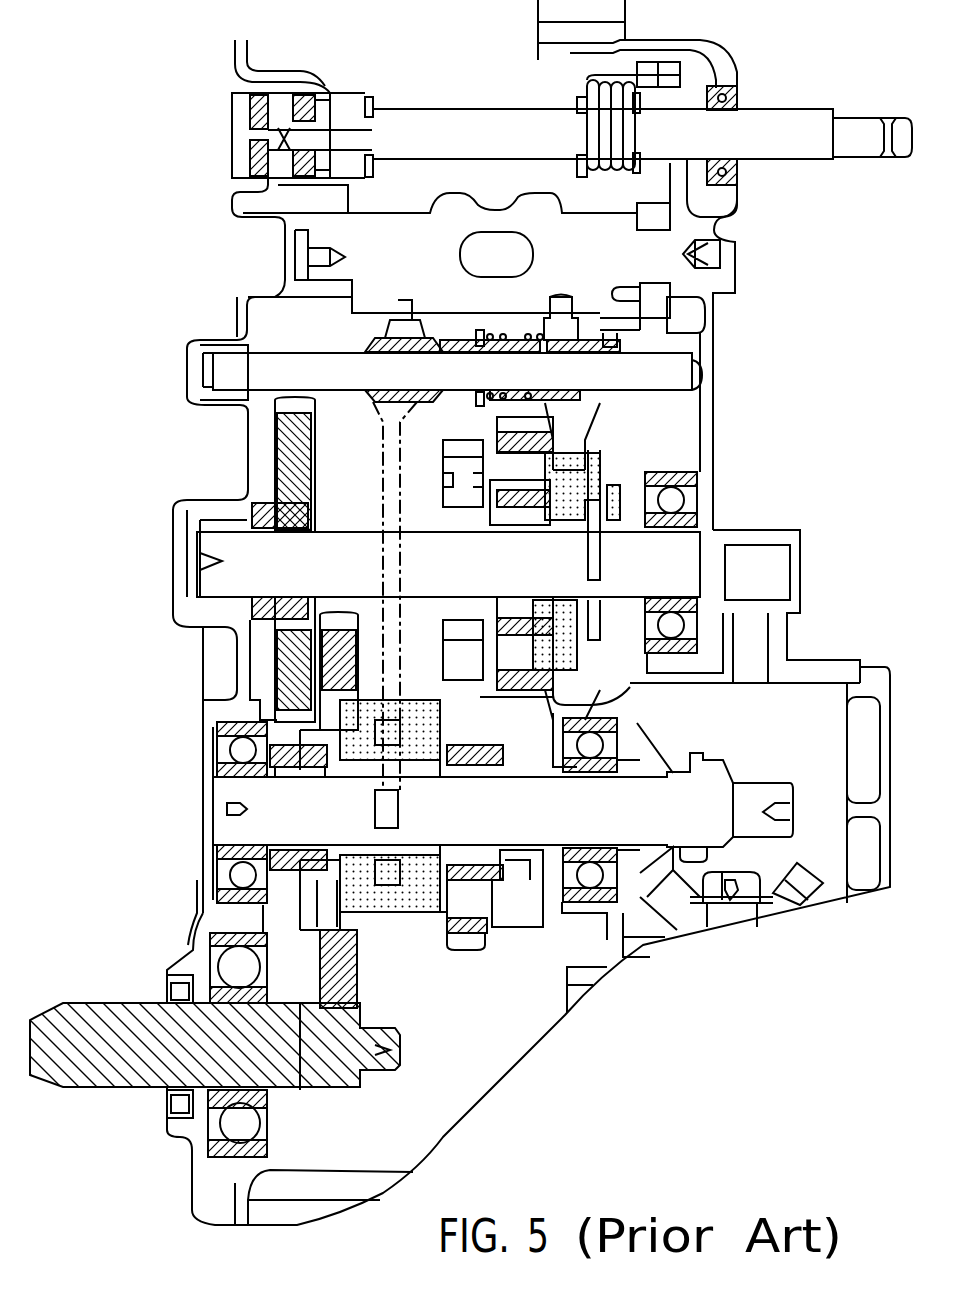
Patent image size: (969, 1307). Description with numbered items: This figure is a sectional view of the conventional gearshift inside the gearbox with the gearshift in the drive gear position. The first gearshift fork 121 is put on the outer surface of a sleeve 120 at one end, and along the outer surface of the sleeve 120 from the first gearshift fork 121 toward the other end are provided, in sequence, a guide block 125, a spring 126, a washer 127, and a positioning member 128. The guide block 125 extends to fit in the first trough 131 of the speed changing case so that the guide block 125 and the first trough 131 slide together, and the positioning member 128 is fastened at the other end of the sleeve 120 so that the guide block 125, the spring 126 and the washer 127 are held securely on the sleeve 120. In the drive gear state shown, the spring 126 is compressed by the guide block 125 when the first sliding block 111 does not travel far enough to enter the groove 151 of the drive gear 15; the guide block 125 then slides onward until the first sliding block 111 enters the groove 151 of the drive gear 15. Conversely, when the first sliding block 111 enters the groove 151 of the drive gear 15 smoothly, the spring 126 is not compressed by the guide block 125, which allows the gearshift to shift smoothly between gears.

The drive gear 15 is at (497, 437).
The first sliding block 111 is at (610, 490).
The sleeve 120 is at (610, 325).
The first gearshift fork 121 is at (583, 552).
The guide block 125 is at (575, 317).
The spring 126 is at (507, 336).
The washer 127 is at (490, 334).
The positioning member 128 is at (480, 345).
The first trough 131 is at (560, 297).
The groove 151 is at (513, 485).